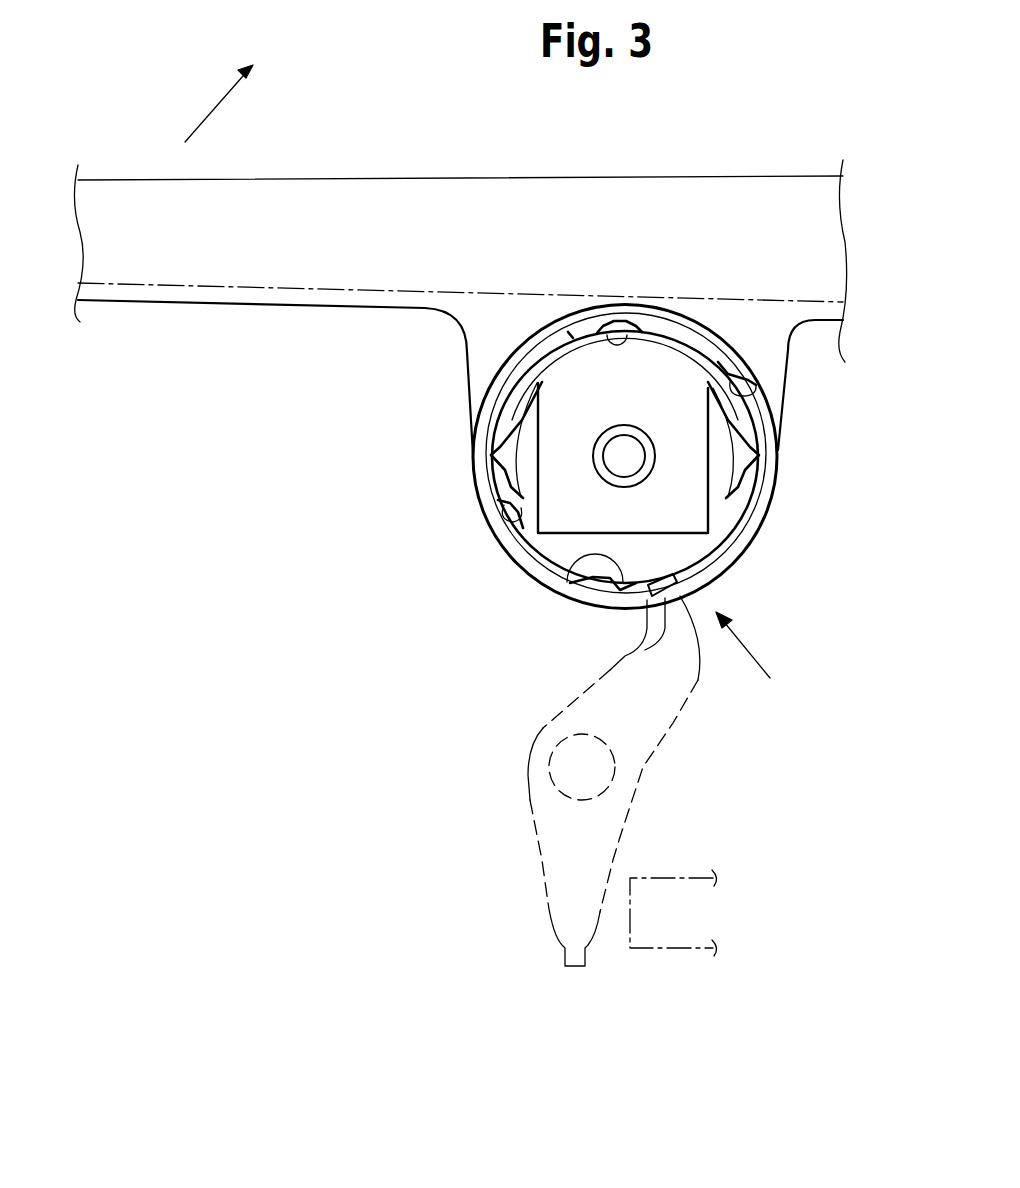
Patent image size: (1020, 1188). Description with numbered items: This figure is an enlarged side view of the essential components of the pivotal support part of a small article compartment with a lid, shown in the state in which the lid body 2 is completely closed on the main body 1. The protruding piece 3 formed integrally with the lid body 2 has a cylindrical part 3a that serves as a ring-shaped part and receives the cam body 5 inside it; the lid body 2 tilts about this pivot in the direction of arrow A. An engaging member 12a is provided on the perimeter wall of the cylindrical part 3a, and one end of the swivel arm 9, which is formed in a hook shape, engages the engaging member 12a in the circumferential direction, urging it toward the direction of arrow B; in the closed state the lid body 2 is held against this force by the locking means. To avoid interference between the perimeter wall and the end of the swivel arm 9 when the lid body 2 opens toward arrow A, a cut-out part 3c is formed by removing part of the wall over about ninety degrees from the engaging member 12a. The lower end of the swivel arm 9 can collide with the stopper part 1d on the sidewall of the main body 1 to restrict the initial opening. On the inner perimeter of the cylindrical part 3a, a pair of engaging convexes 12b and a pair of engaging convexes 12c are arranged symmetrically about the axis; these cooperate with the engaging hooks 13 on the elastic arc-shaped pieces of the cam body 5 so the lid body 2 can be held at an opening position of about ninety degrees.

The arrow A is at (207, 111).
The arrow B is at (742, 651).
The main body 1 is at (145, 283).
The stopper part 1d is at (679, 949).
The lid body 2 is at (324, 190).
The protruding piece 3 is at (467, 382).
The cylindrical part 3a is at (746, 549).
The cut-out part 3c is at (768, 498).
The cam body 5 is at (686, 352).
The swivel arm 9 is at (543, 730).
The engaging member 12a is at (637, 647).
The engaging convexes 12b is at (755, 386).
The engaging convexes 12c is at (596, 331).
The engaging hooks 13 is at (491, 459).